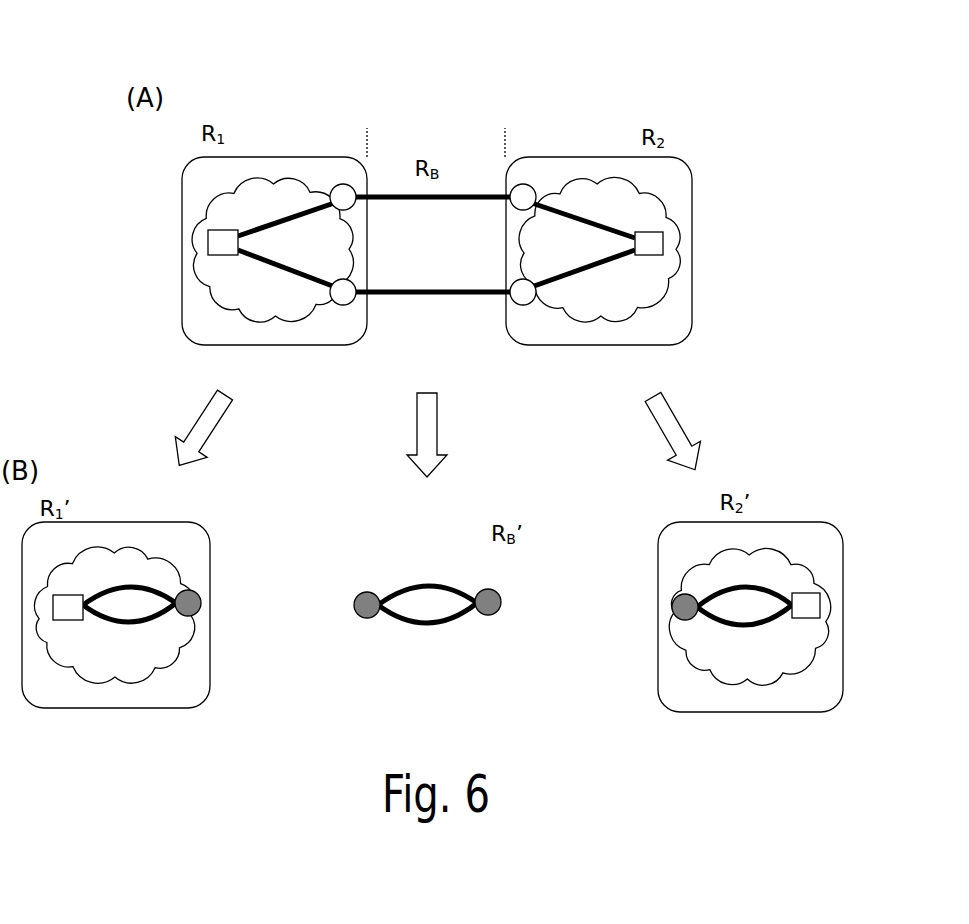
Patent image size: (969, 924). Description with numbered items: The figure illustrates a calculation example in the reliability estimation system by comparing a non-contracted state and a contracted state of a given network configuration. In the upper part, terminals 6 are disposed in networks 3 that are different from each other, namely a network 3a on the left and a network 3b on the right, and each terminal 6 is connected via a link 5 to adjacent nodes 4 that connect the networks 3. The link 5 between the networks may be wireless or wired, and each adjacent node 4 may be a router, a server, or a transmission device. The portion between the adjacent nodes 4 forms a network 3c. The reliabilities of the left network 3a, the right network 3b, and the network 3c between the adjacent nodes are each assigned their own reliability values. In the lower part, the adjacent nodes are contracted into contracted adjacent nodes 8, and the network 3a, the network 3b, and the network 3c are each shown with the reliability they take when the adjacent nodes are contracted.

The network 3 is at (210, 681).
The network on the left 3a is at (367, 326).
The network on the right 3b is at (692, 326).
The network between adjacent nodes 3c is at (505, 140).
The adjacent node 4 is at (355, 194).
The link 5 is at (466, 188).
The terminal 6 is at (232, 235).
The contracted adjacent node 8 is at (200, 596).